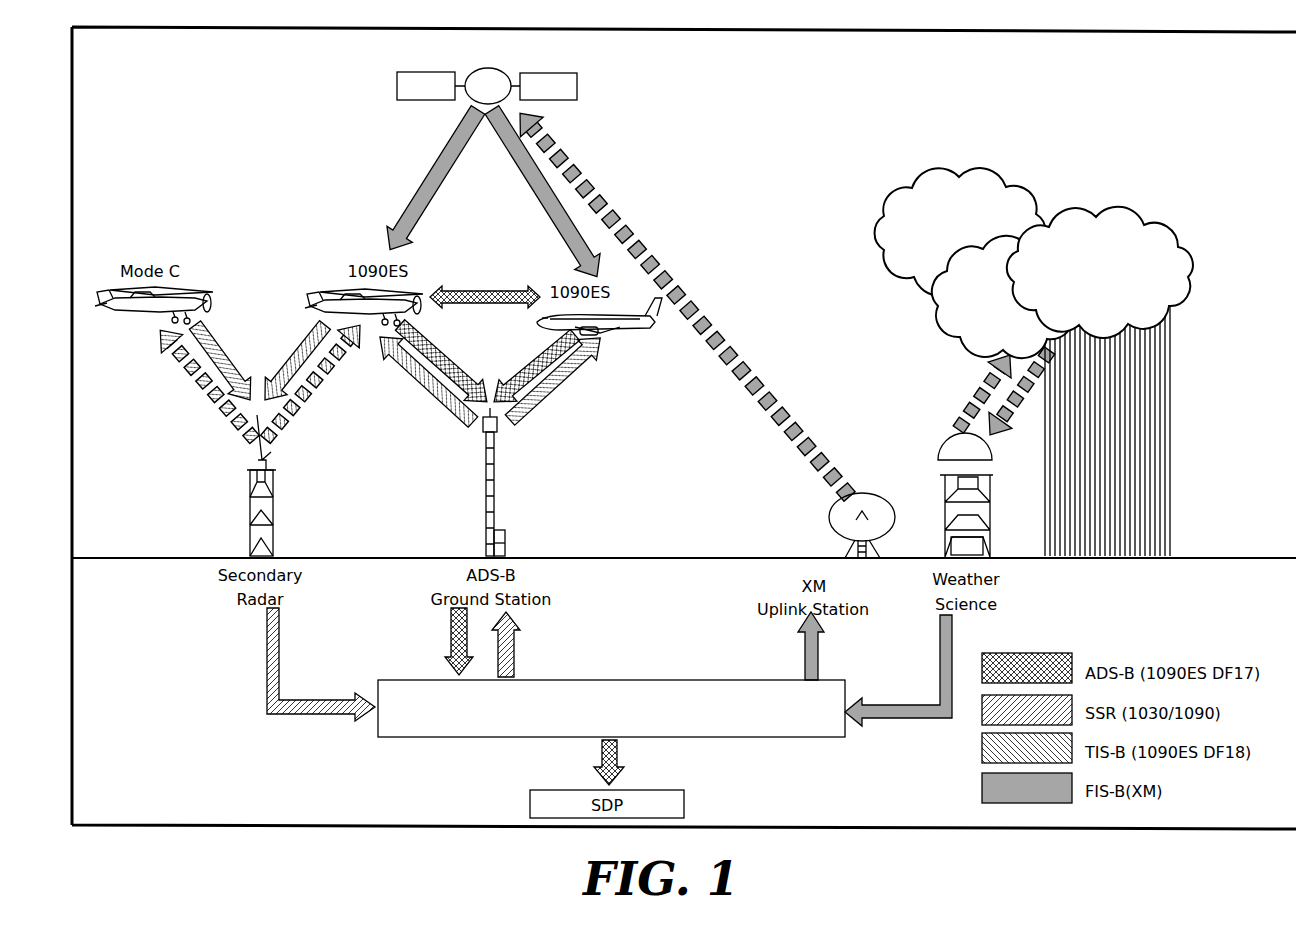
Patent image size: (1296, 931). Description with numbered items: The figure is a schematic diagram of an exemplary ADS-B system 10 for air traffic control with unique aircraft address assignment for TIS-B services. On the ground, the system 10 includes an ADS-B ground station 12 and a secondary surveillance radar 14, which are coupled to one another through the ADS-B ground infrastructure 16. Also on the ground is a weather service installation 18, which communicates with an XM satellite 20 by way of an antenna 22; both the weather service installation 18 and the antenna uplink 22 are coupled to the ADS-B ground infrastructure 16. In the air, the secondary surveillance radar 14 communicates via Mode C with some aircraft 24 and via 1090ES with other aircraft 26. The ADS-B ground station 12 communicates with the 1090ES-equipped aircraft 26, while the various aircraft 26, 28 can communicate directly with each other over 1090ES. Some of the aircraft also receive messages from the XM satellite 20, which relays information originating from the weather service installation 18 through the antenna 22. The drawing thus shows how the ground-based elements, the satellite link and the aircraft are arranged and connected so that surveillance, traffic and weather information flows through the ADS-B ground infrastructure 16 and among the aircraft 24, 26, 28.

The ADS-B system 10 is at (640, 438).
The ADS-B ground station 12 is at (495, 490).
The secondary surveillance radar 14 is at (276, 518).
The ADS-B ground infrastructure 16 is at (600, 733).
The weather service installation 18 is at (942, 442).
The XM satellite 20 is at (578, 87).
The antenna 22 is at (829, 516).
The aircraft 24 is at (150, 318).
The aircraft 26 is at (368, 318).
The aircraft 28 is at (635, 330).